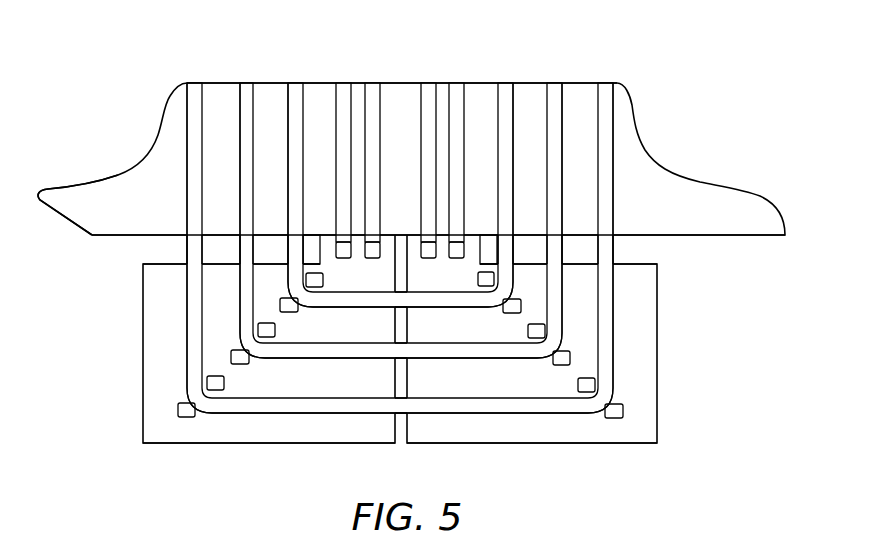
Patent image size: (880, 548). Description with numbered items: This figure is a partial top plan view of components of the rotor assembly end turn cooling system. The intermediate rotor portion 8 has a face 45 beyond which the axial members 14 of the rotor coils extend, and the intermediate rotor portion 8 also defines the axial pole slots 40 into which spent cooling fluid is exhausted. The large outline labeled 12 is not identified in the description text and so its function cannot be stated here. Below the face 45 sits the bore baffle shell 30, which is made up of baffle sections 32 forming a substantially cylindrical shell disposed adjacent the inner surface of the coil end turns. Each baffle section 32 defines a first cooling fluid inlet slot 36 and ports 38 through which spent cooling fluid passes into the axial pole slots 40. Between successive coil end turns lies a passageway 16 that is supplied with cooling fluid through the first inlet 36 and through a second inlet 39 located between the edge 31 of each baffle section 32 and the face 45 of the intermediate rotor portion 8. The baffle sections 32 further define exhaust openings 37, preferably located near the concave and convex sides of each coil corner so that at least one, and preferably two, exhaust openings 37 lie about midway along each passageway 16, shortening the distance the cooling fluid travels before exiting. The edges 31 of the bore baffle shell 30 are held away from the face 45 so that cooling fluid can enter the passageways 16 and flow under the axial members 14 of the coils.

The intermediate rotor portion 8 is at (480, 88).
The body 12 is at (680, 190).
The axial members 14 is at (607, 84).
The passageway 16 is at (208, 340).
The bore baffle shell 30 is at (240, 453).
The edge 31 is at (165, 262).
The baffle section 32 is at (152, 420).
The cooling fluid inlet slot 36 is at (395, 380).
The exhaust opening 37 is at (605, 412).
The port 38 is at (372, 242).
The second inlet slot 39 is at (308, 256).
The axial pole slot 40 is at (372, 88).
The face 45 is at (108, 236).